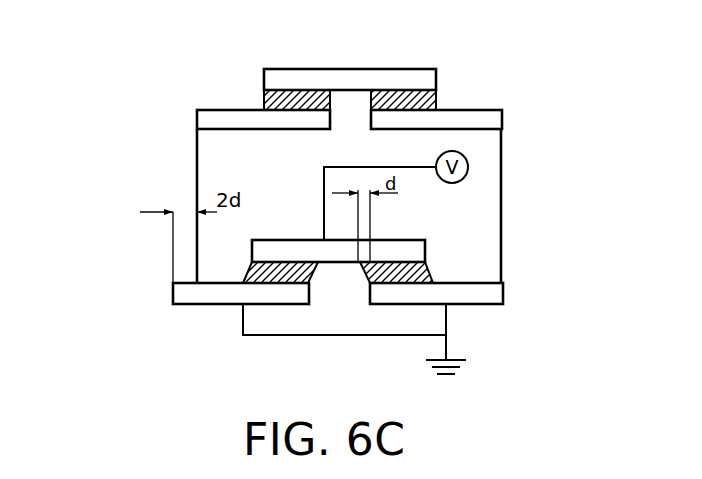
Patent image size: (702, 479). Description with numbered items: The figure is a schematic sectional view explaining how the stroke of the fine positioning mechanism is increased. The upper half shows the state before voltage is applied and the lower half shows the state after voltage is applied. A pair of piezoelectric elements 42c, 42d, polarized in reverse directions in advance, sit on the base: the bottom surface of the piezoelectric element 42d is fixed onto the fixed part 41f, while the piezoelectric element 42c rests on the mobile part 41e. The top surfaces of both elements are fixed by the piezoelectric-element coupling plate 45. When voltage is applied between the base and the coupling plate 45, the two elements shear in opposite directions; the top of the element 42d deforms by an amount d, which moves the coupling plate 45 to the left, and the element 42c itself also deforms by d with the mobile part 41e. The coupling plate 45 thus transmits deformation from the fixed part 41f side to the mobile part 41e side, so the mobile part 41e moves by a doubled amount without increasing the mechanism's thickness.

The piezoelectric-element coupling plate 45 is at (327, 83).
The piezoelectric element 42c is at (262, 99).
The piezoelectric element 42d is at (440, 97).
The mobile part 41e is at (208, 120).
The fixed part 41f is at (491, 117).